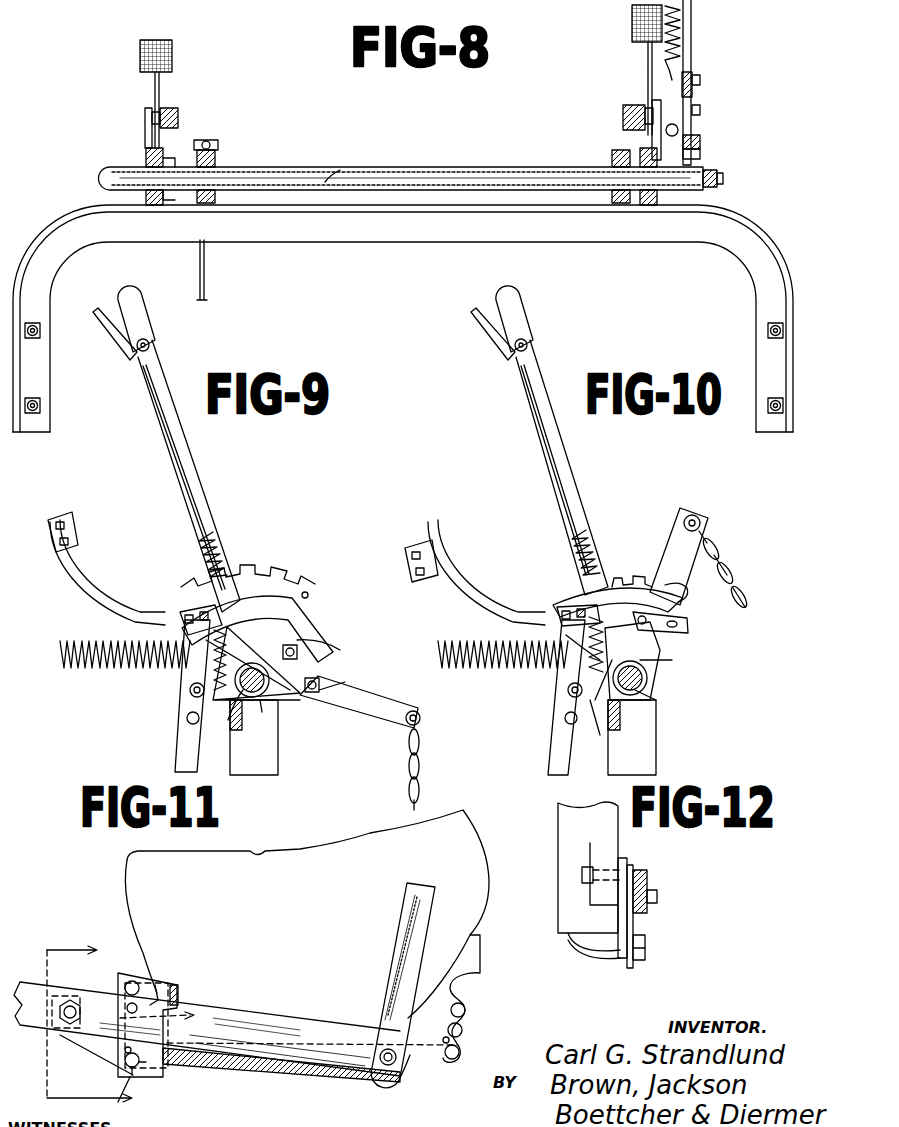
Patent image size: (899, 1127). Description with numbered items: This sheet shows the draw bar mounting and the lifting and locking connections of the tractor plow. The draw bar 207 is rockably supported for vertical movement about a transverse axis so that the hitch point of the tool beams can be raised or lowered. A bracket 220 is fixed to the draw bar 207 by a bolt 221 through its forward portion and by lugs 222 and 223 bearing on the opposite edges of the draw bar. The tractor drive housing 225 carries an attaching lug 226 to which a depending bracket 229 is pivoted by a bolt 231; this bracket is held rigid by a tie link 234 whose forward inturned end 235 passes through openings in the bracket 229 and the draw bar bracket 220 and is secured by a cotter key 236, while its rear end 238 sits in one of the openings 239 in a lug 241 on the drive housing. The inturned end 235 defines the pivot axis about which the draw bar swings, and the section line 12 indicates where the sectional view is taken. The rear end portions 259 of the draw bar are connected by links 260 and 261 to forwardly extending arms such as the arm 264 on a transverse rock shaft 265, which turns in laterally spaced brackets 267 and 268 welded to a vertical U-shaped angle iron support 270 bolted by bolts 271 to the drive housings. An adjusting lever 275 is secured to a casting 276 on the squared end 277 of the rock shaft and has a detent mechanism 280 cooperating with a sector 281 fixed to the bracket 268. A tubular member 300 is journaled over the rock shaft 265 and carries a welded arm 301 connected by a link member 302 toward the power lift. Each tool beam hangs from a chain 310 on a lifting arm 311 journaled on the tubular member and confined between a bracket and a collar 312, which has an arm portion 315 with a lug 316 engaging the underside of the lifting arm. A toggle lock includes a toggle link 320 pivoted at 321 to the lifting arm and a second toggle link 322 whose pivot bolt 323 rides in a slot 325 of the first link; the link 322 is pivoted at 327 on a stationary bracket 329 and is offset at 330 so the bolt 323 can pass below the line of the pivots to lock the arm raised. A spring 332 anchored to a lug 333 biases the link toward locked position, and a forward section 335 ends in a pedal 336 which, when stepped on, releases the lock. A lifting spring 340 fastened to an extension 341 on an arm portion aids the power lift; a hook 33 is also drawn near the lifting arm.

In FIG. 11, the section line 12— 12 is at (106, 1029).
In FIG. 10, the hook 33 is at (690, 600).
In FIG. 11, the draw bar 207 is at (30, 1030).
In FIG. 12, the draw bar 207 is at (640, 870).
In FIG. 11, the bracket 220 is at (160, 985).
In FIG. 11, the bolt 221 is at (70, 1000).
In FIG. 12, the bolt 221 is at (657, 896).
In FIG. 11, the lug 222 is at (188, 982).
In FIG. 11, the lug 223 is at (172, 1068).
In FIG. 11, the drive housing 225 is at (140, 905).
In FIG. 12, the drive housing 225 is at (578, 855).
In FIG. 11, the attaching lug 226 is at (158, 995).
In FIG. 11, the depending bracket 229 is at (138, 982).
In FIG. 11, the bolt 231 is at (136, 1004).
In FIG. 11, the tie link 234 is at (218, 1062).
In FIG. 12, the tie link 234 is at (590, 953).
In FIG. 11, the forward inturned end 235 is at (118, 1102).
In FIG. 12, the forward inturned end 235 is at (645, 945).
In FIG. 11, the cotter key 236 is at (125, 1062).
In FIG. 11, the rear end 238 is at (460, 1050).
In FIG. 11, the openings 239 is at (465, 1010).
In FIG. 11, the lug 241 is at (458, 985).
In FIG. 11, the rear end portion 259 is at (350, 1075).
In FIG. 11, the link 260 is at (405, 923).
In FIG. 9, the link 261 is at (190, 742).
In FIG. 10, the link 261 is at (562, 745).
In FIG. 9, the forwardly extending arm 264 is at (190, 690).
In FIG. 8, the rock shaft 265 is at (346, 161).
In FIG. 9, the rock shaft 265 is at (228, 720).
In FIG. 10, the rock shaft 265 is at (667, 693).
In FIG. 8, the bracket 267 is at (146, 134).
In FIG. 8, the bracket 268 is at (653, 130).
In FIG. 10, the bracket 268 is at (565, 718).
In FIG. 8, the U-shaped angle iron support 270 is at (395, 225).
In FIG. 9, the U-shaped angle iron support 270 is at (260, 755).
In FIG. 10, the U-shaped angle iron support 270 is at (638, 752).
In FIG. 8, the bolts 271 is at (40, 336).
In FIG. 8, the adjusting lever 275 is at (692, 48).
In FIG. 9, the adjusting lever 275 is at (192, 478).
In FIG. 10, the adjusting lever 275 is at (543, 382).
In FIG. 8, the casting 276 is at (700, 147).
In FIG. 8, the squared end 277 is at (722, 172).
In FIG. 8, the detent mechanism 280 is at (646, 48).
In FIG. 8, the sector 281 is at (692, 92).
In FIG. 9, the sector 281 is at (290, 590).
In FIG. 10, the sector 281 is at (650, 575).
In FIG. 8, the tubular member 300 is at (404, 152).
In FIG. 9, the tubular member 300 is at (258, 690).
In FIG. 10, the tubular member 300 is at (640, 715).
In FIG. 8, the arm 301 is at (206, 140).
In FIG. 8, the link member 302 is at (205, 292).
In FIG. 9, the chain 310 is at (430, 790).
In FIG. 10, the chain 310 is at (745, 575).
In FIG. 8, the lifting arm 311 is at (158, 160).
In FIG. 9, the lifting arm 311 is at (360, 700).
In FIG. 10, the lifting arm 311 is at (668, 545).
In FIG. 8, the collar 312 is at (175, 152).
In FIG. 9, the arm portion 315 is at (280, 700).
In FIG. 10, the arm portion 315 is at (650, 672).
In FIG. 9, the lug 316 is at (300, 705).
In FIG. 10, the lug 316 is at (650, 635).
In FIG. 9, the toggle link 320 is at (324, 670).
In FIG. 9, the pivot 321 is at (354, 677).
In FIG. 10, the toggle link 322 is at (585, 598).
In FIG. 9, the pivot bolt 323 is at (335, 646).
In FIG. 10, the slot 325 is at (690, 625).
In FIG. 8, the pivot 327 is at (146, 116).
In FIG. 9, the pivot 327 is at (175, 608).
In FIG. 10, the pivot 327 is at (553, 604).
In FIG. 10, the stationary bracket 329 is at (575, 648).
In FIG. 9, the offset 330 is at (290, 612).
In FIG. 10, the offset 330 is at (620, 595).
In FIG. 10, the spring 332 is at (568, 690).
In FIG. 9, the lug 333 is at (187, 718).
In FIG. 10, the lug 333 is at (590, 735).
In FIG. 9, the forward section 335 is at (90, 592).
In FIG. 10, the forward section 335 is at (465, 598).
In FIG. 8, the pedal 336 is at (165, 62).
In FIG. 9, the pedal 336 is at (90, 528).
In FIG. 10, the pedal 336 is at (440, 546).
In FIG. 9, the lifting spring 340 is at (125, 670).
In FIG. 10, the lifting spring 340 is at (503, 669).
In FIG. 9, the extension 341 is at (297, 652).